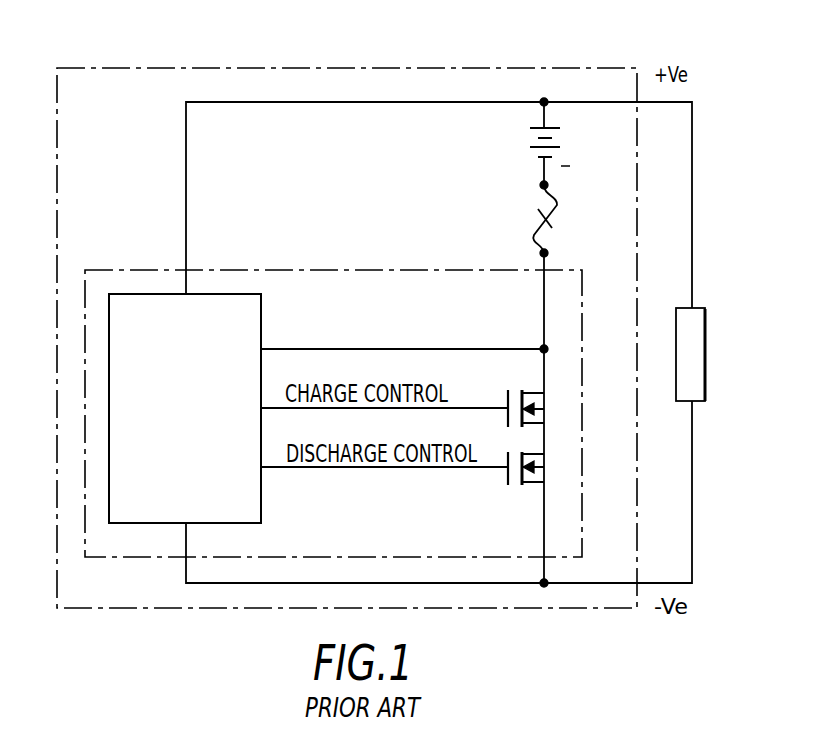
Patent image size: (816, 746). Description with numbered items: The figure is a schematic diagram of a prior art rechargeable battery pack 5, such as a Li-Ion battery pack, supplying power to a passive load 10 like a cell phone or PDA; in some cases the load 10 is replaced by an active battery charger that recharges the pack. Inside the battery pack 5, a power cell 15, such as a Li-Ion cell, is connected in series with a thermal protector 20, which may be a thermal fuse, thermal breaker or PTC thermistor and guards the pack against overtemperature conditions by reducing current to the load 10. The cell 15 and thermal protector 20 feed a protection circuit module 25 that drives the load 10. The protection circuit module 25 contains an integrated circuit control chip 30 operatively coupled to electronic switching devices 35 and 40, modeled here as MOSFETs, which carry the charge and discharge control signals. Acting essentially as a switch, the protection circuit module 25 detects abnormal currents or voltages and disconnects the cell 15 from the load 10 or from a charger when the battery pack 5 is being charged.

The rechargeable battery pack 5 is at (308, 68).
The passive load 10 is at (706, 386).
The power cell 15 is at (528, 140).
The thermal protector 20 is at (533, 232).
The protection circuit module 25 is at (293, 270).
The integrated circuit control chip 30 is at (261, 319).
The electronic switching device 35 is at (506, 400).
The electronic switching device 40 is at (506, 478).